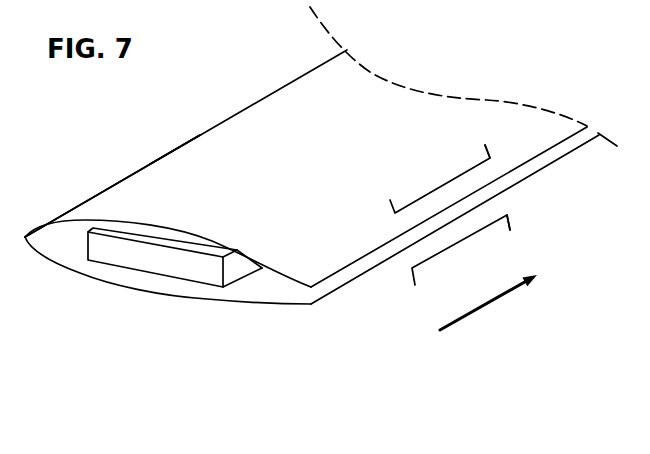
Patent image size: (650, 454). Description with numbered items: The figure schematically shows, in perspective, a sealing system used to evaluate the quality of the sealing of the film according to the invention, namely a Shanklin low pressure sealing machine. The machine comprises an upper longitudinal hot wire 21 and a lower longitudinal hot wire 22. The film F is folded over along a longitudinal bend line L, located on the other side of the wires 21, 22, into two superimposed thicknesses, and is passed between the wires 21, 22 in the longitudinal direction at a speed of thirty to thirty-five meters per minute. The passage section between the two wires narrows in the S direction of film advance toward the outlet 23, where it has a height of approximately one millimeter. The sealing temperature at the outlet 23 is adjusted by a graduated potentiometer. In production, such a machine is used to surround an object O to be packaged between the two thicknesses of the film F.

The upper longitudinal hot wire 21 is at (443, 184).
The lower longitudinal hot wire 22 is at (460, 243).
The outlet 23 is at (487, 146).
The object O is at (127, 257).
The longitudinal bend line L is at (104, 191).
The film F is at (180, 173).
The direction of film advance S is at (483, 308).